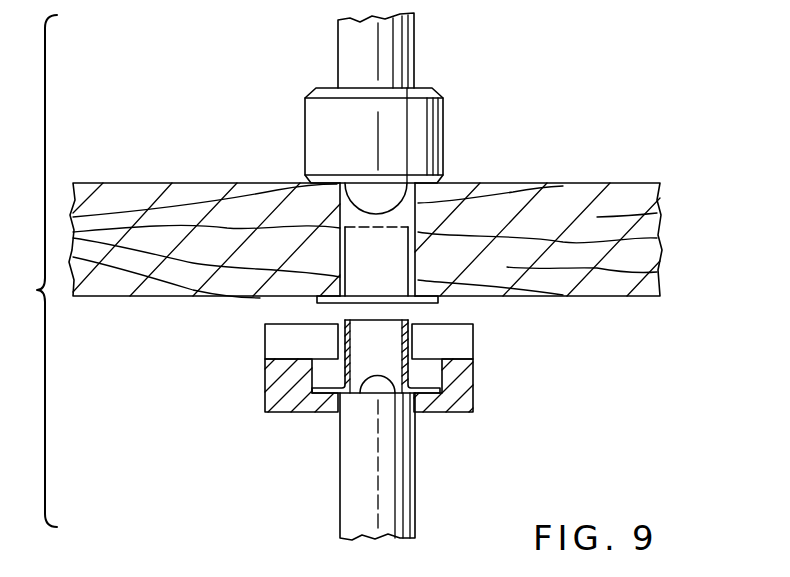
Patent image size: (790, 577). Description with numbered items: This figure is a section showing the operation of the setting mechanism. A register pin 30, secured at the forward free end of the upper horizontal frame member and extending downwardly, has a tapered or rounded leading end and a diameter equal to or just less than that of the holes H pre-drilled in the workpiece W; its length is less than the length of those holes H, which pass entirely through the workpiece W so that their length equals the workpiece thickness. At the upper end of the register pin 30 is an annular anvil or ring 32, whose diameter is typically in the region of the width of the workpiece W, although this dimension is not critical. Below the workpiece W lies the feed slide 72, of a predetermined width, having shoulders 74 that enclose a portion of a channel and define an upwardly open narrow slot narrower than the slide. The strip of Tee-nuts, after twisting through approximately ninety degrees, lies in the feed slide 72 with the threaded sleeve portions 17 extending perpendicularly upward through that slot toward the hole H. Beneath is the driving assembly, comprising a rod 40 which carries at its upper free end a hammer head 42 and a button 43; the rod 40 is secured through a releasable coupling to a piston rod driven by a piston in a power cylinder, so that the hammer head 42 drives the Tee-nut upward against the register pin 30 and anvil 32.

The register pin 30 is at (340, 223).
The annular anvil or ring 32 is at (305, 140).
The holes H is at (417, 232).
The workpiece W is at (557, 208).
The shoulders 74 is at (293, 325).
The feed slide 72 is at (292, 365).
The threaded sleeve portions 17 is at (410, 333).
The button 43 is at (362, 372).
The rod 40 is at (340, 515).
The hammer head 42 is at (412, 425).